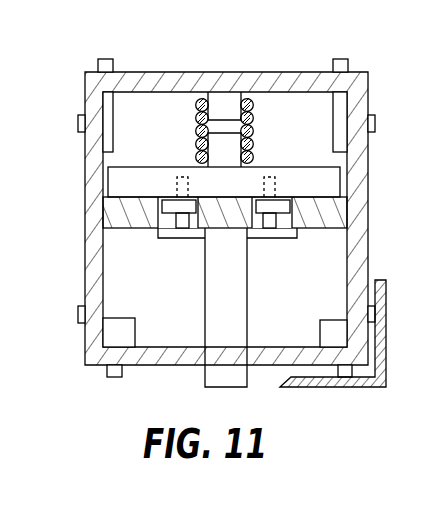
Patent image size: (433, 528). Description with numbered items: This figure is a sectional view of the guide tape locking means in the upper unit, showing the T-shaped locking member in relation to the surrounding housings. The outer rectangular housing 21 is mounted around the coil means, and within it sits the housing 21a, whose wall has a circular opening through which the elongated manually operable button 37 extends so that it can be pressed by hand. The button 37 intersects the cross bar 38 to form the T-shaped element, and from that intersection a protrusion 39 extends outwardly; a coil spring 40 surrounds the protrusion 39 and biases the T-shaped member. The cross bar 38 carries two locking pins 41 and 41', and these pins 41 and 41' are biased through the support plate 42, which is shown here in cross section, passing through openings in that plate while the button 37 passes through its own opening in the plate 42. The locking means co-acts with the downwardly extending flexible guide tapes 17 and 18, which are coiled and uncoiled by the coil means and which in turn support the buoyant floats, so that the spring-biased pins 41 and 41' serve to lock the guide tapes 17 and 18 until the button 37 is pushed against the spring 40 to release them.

The housing 21a is at (356, 163).
The housing 21 is at (384, 372).
The manually operable button 37 is at (250, 386).
The cross bar 38 is at (314, 178).
The protrusion 39 is at (250, 137).
The coil spring 40 is at (251, 96).
The flexible guide tape 17 is at (170, 210).
The flexible guide tape 18 is at (256, 212).
The locking pin 41 is at (174, 232).
The locking pin 41' is at (287, 229).
The support plate 42 is at (307, 230).